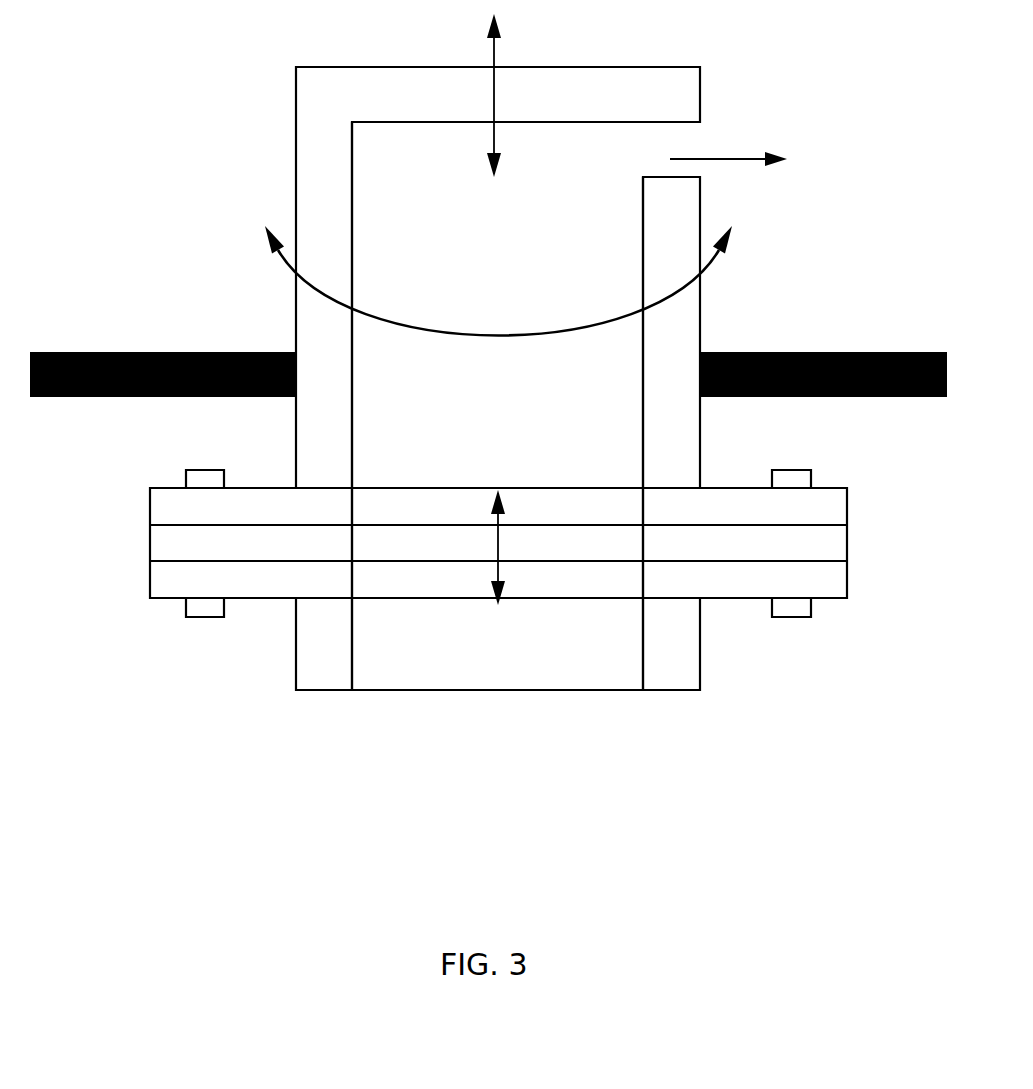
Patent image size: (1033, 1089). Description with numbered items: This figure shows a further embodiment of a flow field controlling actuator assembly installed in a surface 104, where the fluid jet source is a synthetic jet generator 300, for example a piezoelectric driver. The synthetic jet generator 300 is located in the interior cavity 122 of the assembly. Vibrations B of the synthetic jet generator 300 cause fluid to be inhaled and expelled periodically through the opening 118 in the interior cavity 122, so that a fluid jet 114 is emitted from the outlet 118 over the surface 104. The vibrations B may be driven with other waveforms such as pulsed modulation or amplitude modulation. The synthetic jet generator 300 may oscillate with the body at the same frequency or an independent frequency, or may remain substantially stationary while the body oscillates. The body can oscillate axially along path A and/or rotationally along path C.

The surface 104 is at (70, 352).
The fluid jet 114 is at (785, 162).
The outlet 118 is at (685, 138).
The interior cavity 122 is at (523, 308).
The synthetic jet generator 300 is at (848, 551).
The axial oscillation path A is at (488, 32).
The vibrations B is at (494, 492).
The rotational oscillation path C is at (283, 282).